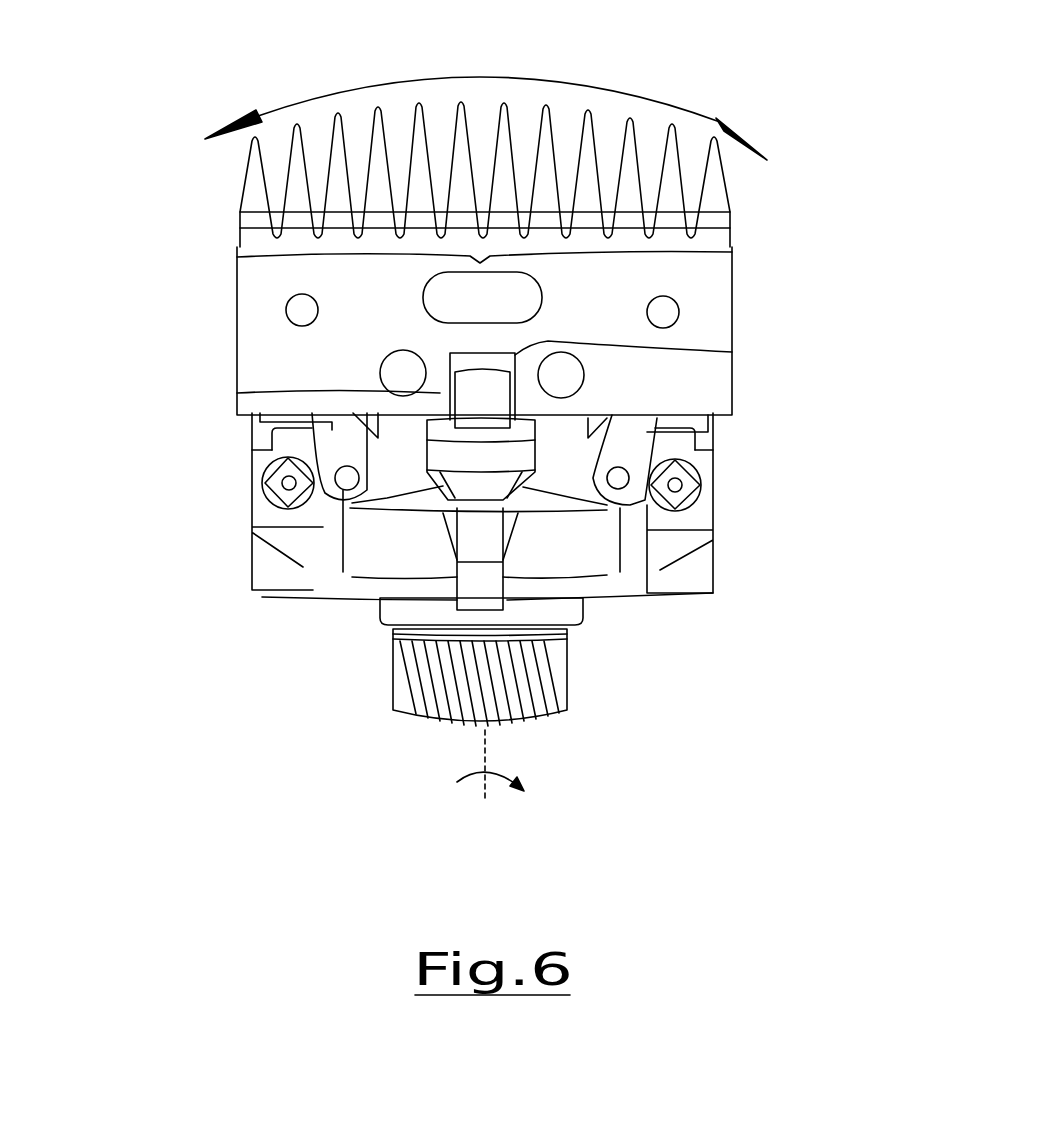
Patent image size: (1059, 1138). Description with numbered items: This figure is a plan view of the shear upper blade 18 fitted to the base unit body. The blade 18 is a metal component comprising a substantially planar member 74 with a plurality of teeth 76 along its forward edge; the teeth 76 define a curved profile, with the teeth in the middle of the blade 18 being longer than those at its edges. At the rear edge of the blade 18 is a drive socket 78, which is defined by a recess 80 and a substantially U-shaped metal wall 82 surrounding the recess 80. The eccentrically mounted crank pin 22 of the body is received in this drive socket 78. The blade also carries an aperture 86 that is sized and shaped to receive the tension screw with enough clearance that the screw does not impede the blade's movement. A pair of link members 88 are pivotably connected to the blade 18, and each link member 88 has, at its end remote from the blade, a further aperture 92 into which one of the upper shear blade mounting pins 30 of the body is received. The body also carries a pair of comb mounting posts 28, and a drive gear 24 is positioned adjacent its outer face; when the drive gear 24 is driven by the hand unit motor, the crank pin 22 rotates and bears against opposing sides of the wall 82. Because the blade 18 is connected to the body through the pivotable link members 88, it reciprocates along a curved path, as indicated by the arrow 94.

The shear upper blade 18 is at (596, 328).
The crank pin 22 is at (485, 413).
The drive gear 24 is at (423, 685).
The comb mounting posts 28 is at (273, 507).
The upper shear blade mounting pins 30 is at (464, 583).
The aperture 92 is at (347, 478).
The planar member 74 is at (705, 293).
The teeth 76 is at (253, 250).
The drive socket 78 is at (237, 393).
The recess 80 is at (708, 355).
The U-shaped wall 82 is at (732, 352).
The aperture 86 is at (452, 305).
The link members 88 is at (300, 428).
The arrow 94 is at (555, 80).